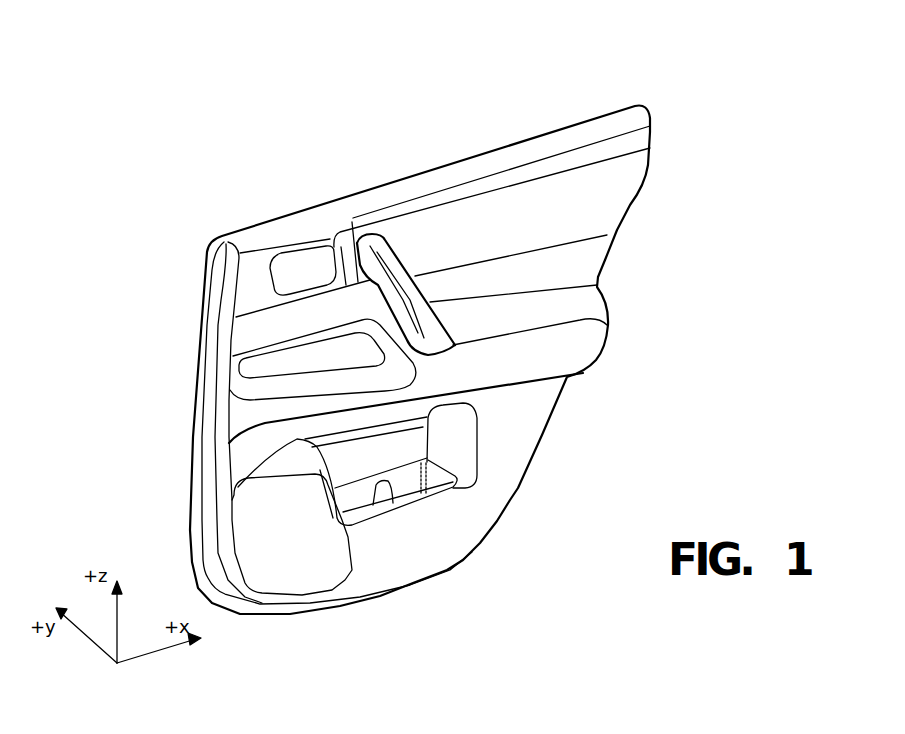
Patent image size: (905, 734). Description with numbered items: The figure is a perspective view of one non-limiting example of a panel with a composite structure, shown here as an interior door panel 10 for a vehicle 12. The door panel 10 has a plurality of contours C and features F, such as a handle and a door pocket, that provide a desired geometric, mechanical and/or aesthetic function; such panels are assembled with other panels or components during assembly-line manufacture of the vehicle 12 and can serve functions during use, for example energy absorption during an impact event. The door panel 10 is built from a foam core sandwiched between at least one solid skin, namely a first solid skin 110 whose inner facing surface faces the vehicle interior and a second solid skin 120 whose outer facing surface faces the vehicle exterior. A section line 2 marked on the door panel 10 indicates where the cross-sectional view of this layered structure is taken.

The door panel 10 is at (635, 70).
The vehicle 12 is at (206, 159).
The second solid skin 120 is at (378, 190).
The first solid skin 110 is at (594, 207).
The contours C is at (595, 308).
The features F is at (277, 368).
The section 2- 2 is at (491, 145).